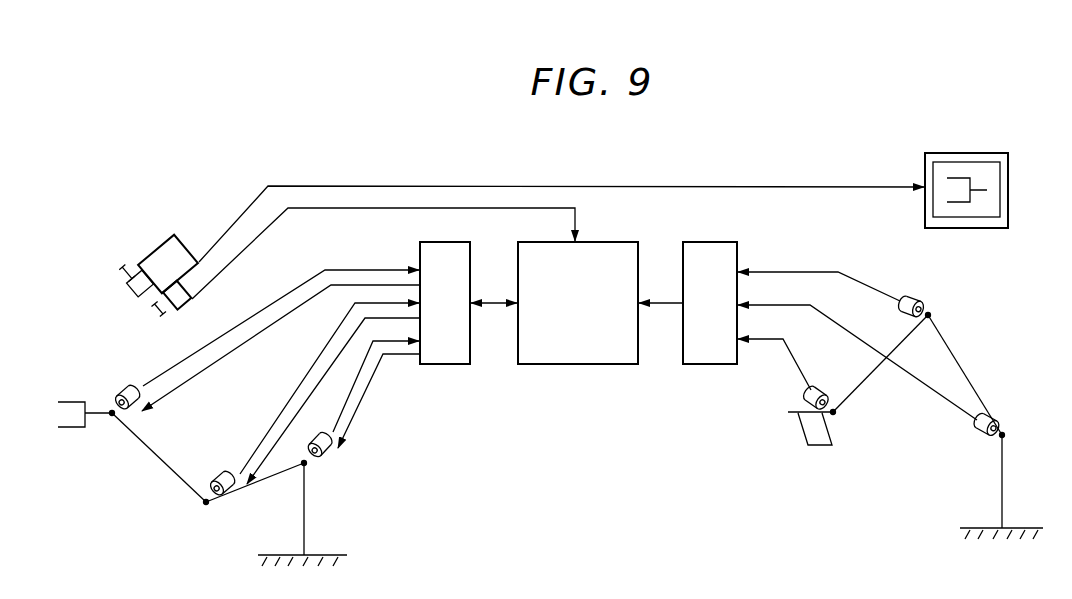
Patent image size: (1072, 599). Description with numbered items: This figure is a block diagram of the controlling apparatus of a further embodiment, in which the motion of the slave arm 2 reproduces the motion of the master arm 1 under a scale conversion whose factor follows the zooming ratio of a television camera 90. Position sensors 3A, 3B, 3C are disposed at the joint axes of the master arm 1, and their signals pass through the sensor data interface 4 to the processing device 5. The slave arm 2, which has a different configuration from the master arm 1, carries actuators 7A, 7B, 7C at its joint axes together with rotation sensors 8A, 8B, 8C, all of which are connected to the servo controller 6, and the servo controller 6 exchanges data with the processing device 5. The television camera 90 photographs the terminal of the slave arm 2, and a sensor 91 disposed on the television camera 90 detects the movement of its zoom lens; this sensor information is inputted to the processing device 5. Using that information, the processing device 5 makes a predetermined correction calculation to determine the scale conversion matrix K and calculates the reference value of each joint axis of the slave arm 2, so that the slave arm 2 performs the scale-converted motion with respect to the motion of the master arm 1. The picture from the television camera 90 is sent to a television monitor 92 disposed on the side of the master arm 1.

The master arm 1 is at (971, 371).
The slave arm 2 is at (156, 462).
The position sensor 3A is at (818, 387).
The position sensor 3B is at (913, 296).
The position sensor 3C is at (975, 430).
The sensor data interface 4 is at (718, 242).
The processing device 5 is at (615, 242).
The servo controller 6 is at (455, 242).
The actuator 7A is at (117, 397).
The actuator 7B is at (213, 476).
The actuator 7C is at (322, 457).
The rotation sensor 8A is at (128, 383).
The rotation sensor 8B is at (228, 468).
The rotation sensor 8C is at (338, 440).
The television camera 90 is at (173, 234).
The sensor 91 is at (192, 303).
The television monitor 92 is at (1010, 182).